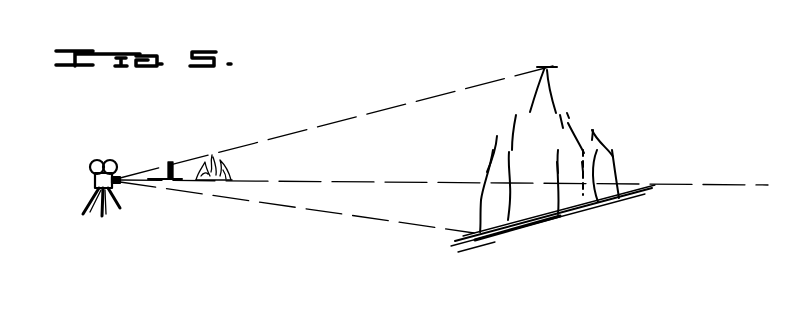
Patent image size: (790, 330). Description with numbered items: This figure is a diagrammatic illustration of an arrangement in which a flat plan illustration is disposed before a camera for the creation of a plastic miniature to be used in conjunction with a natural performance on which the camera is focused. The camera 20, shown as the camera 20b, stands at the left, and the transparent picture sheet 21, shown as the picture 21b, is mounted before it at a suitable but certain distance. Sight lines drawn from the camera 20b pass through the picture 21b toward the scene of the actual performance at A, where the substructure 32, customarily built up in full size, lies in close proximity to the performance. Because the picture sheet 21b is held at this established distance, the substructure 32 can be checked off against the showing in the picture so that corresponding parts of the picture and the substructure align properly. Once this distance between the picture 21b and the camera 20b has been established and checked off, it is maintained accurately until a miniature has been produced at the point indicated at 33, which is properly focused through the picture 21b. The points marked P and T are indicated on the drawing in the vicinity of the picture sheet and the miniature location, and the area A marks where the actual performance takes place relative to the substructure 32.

The camera 20 is at (101, 168).
The camera 20b is at (102, 161).
The transparent picture sheet 21 is at (158, 162).
The transparent picture sheet 21b is at (170, 162).
The point of miniature 33 is at (219, 168).
The substructure 32 is at (505, 213).
The point P is at (173, 137).
The point T is at (219, 183).
The actual performance A is at (549, 170).